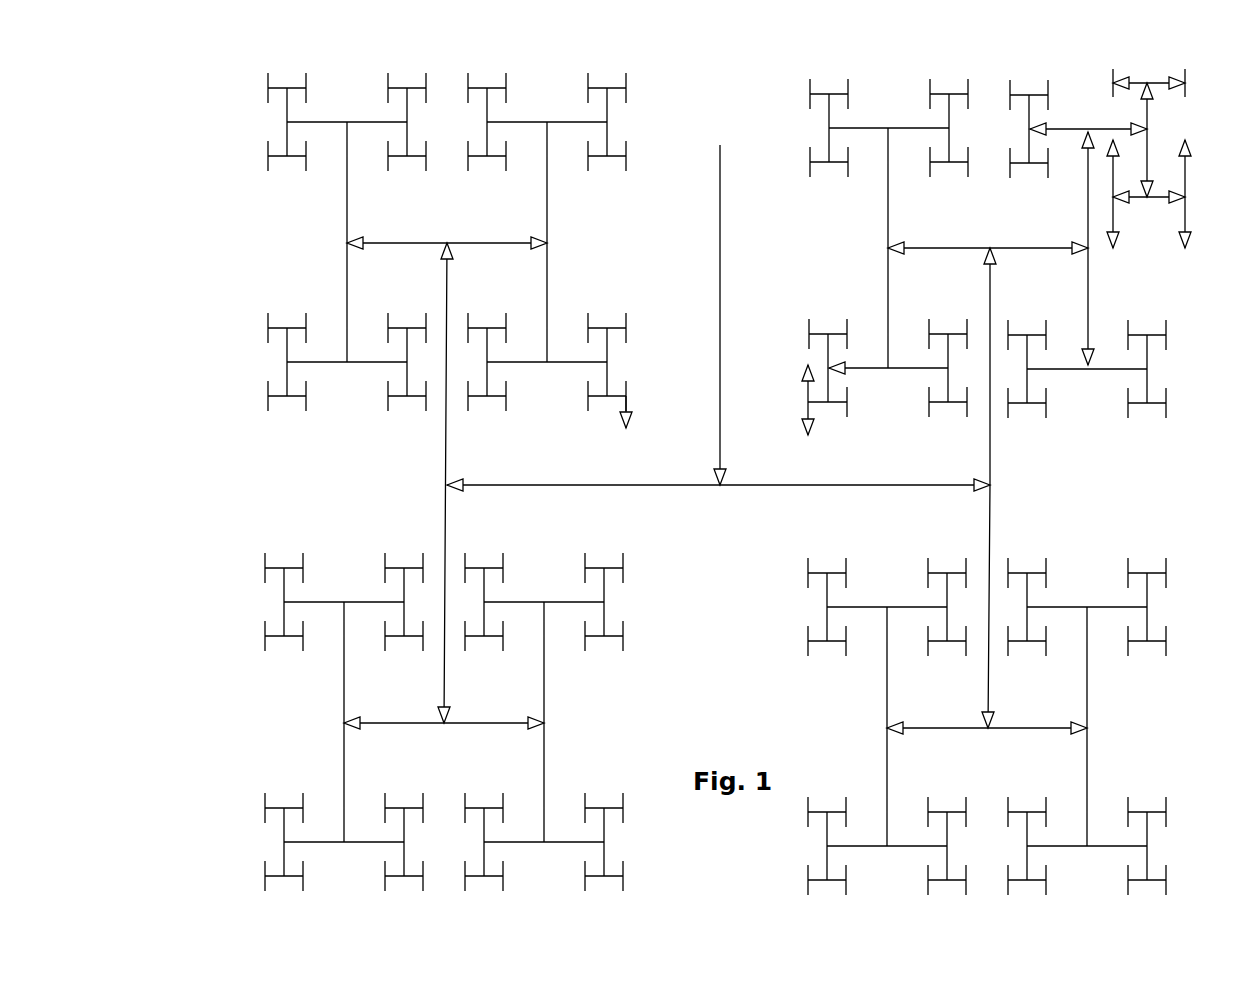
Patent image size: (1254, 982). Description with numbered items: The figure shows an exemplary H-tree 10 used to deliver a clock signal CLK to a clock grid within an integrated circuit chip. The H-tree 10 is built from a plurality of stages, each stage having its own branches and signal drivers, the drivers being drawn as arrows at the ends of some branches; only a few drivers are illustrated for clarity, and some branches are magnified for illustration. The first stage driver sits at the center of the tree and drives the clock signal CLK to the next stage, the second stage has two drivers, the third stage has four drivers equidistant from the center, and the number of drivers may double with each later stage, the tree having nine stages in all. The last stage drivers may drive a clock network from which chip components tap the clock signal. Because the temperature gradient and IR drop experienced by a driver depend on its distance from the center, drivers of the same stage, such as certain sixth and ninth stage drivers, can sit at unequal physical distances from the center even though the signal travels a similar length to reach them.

The H-tree 10 is at (233, 109).
The clock signal CLK is at (720, 302).